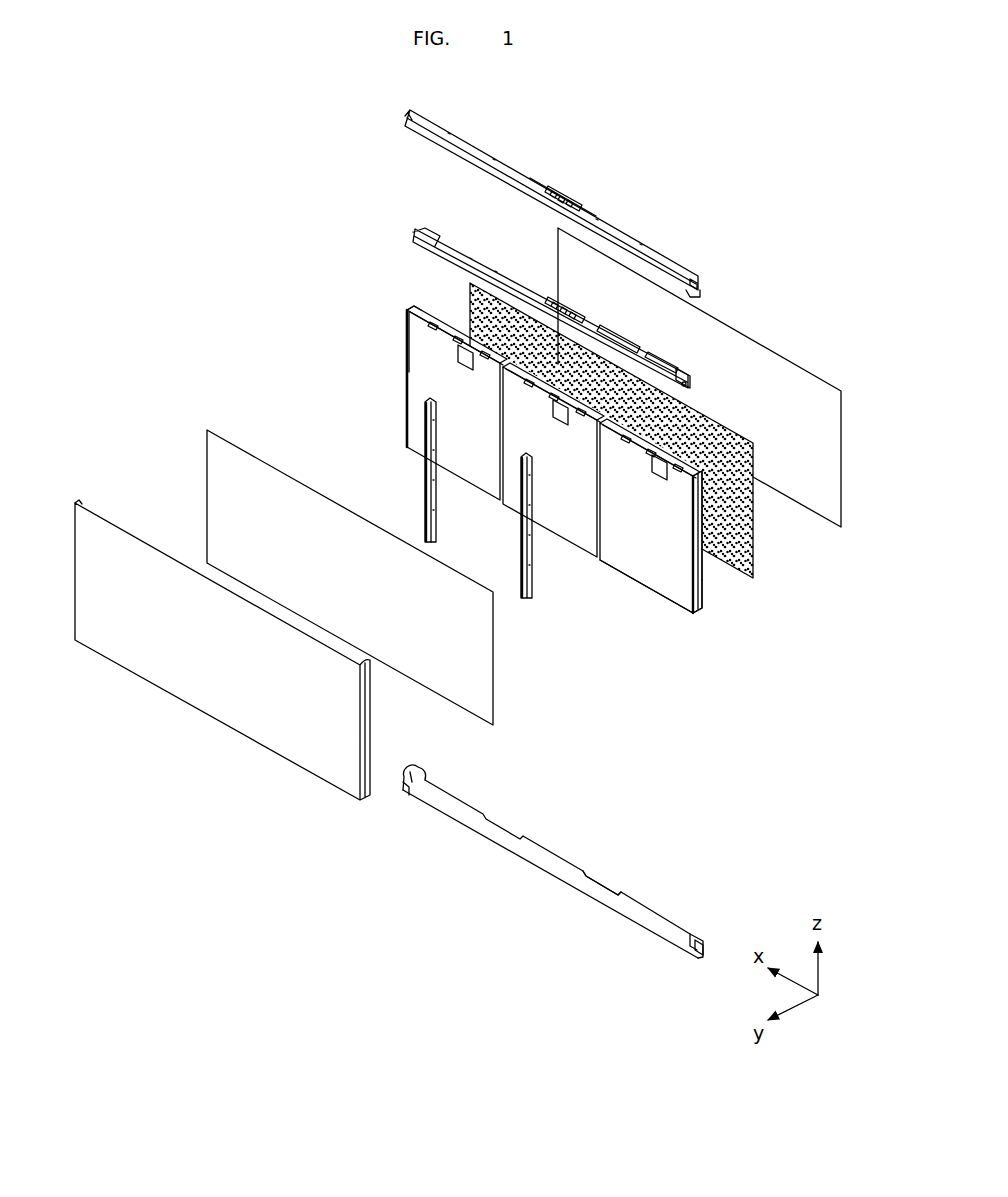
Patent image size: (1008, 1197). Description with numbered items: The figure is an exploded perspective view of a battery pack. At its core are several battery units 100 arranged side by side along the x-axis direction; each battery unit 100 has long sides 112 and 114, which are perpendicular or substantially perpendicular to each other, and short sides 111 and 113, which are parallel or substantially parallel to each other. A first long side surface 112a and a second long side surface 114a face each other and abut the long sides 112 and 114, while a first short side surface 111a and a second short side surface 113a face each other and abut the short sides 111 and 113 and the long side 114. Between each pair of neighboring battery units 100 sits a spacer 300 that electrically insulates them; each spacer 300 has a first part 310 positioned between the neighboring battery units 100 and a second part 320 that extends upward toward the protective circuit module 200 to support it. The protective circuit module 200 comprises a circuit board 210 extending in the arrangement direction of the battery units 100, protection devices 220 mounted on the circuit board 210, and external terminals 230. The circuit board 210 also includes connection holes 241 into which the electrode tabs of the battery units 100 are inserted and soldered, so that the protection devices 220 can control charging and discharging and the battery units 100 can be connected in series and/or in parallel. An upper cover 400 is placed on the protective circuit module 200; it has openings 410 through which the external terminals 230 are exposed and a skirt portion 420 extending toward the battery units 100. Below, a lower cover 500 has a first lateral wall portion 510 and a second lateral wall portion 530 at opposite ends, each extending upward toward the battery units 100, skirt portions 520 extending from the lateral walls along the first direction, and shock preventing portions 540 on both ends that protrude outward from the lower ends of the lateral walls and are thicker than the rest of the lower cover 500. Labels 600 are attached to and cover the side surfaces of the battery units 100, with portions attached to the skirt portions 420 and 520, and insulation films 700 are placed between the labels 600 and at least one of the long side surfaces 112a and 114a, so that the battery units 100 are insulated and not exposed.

The battery unit 100 is at (573, 482).
The short side 111 is at (700, 610).
The first short side surface 111a is at (703, 511).
The long side 112 is at (663, 600).
The first long side surface 112a is at (643, 523).
The short side 113 is at (406, 445).
The second short side surface 113a is at (406, 365).
The long side 114 is at (702, 598).
The second long side surface 114a is at (703, 570).
The protective circuit module 200 is at (590, 323).
The circuit board 210 is at (694, 374).
The protection devices 220 is at (648, 363).
The external terminals 230 is at (567, 312).
The connection holes 241 is at (690, 386).
The spacer 300 is at (438, 517).
The first part 310 is at (422, 432).
The second part 320 is at (424, 398).
The upper cover 400 is at (562, 203).
The openings 410 is at (566, 197).
The skirt portion 420 is at (664, 264).
The lower cover 500 is at (564, 865).
The first lateral wall portion 510 is at (700, 935).
The skirt portions 520 is at (666, 912).
The second lateral wall portion 530 is at (412, 768).
The shock preventing portions 540 is at (403, 787).
The label 600 is at (788, 360).
The insulation film 700 is at (755, 548).